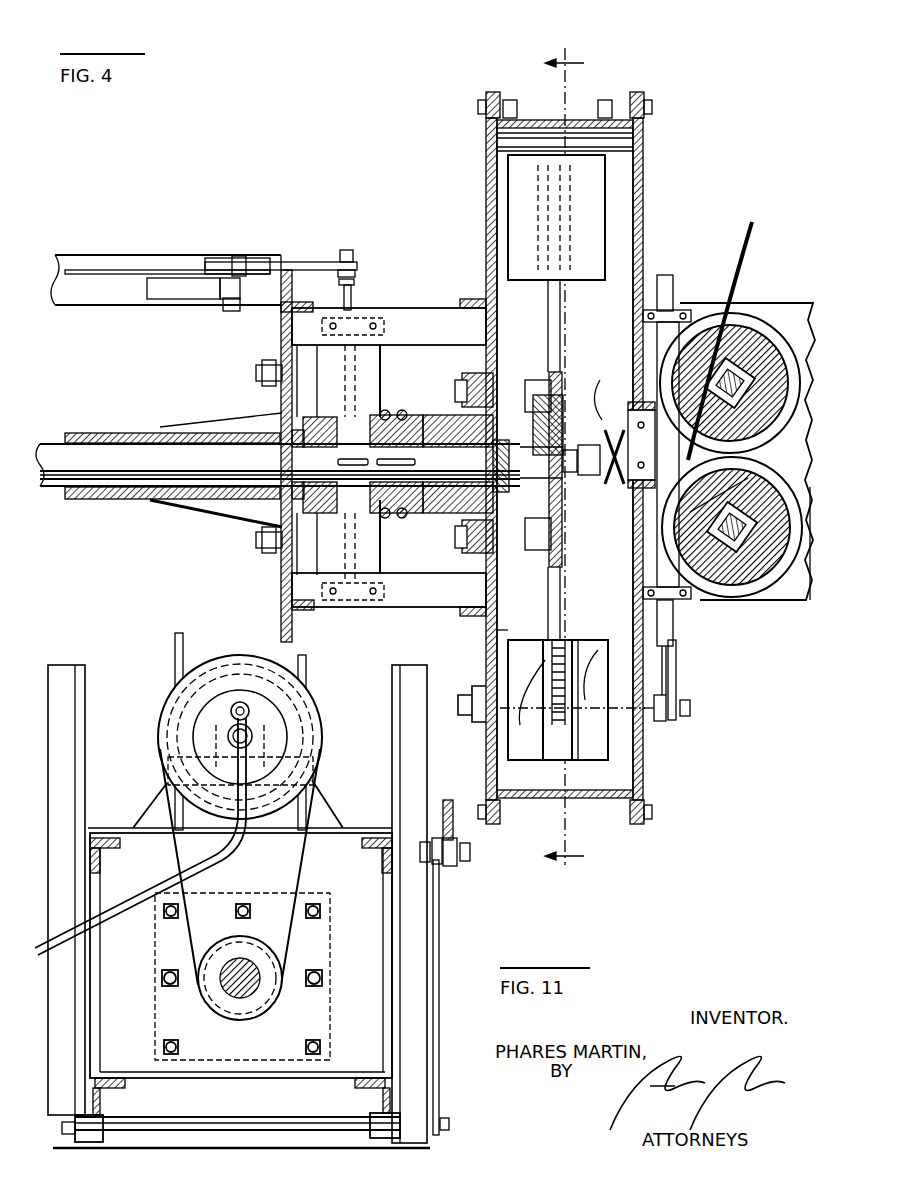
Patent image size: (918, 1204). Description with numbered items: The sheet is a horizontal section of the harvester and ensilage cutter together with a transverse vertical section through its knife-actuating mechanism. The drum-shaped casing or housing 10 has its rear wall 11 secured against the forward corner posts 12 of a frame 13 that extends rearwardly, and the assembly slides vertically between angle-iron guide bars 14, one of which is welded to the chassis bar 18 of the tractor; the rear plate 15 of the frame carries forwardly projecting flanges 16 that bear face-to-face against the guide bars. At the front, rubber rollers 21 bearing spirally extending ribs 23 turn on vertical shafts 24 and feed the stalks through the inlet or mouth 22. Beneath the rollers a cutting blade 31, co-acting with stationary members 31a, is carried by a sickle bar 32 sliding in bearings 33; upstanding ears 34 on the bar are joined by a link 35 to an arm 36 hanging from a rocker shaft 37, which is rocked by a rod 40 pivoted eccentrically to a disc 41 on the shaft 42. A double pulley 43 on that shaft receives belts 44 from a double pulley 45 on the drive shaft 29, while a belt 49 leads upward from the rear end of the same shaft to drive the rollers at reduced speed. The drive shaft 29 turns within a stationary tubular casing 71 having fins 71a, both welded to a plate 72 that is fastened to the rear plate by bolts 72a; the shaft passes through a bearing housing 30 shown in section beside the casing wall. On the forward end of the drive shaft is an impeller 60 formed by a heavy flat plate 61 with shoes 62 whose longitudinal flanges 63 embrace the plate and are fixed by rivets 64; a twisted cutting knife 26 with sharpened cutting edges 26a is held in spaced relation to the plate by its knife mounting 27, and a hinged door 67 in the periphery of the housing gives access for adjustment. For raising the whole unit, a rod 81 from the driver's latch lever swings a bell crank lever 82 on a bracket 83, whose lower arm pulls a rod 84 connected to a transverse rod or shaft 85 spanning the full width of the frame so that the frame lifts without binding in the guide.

In FIG. 4, the casing or housing 10 is at (484, 150).
In FIG. 4, the rear wall 11 is at (484, 205).
In FIG. 4, the forward corner posts 12 is at (468, 648).
In FIG. 4, the frame 13 is at (410, 318).
In FIG. 11, the frame 13 is at (112, 833).
In FIG. 4, the guide bars 14 is at (286, 277).
In FIG. 11, the guide bars 14 is at (60, 676).
In FIG. 4, the rear plate 15 is at (282, 326).
In FIG. 11, the rear plate 15 is at (380, 1012).
In FIG. 4, the flanges 16 is at (310, 375).
In FIG. 11, the flanges 16 is at (98, 1010).
In FIG. 4, the chassis bar 18 is at (160, 272).
In FIG. 4, the rollers 21 is at (735, 335).
In FIG. 4, the inlet or mouth 22 is at (604, 380).
In FIG. 4, the spirally extending ribs 23 is at (760, 322).
In FIG. 4, the shafts 24 is at (752, 500).
In FIG. 4, the cutting knife 26 is at (612, 490).
In FIG. 4, the cutting edges 26a is at (612, 540).
In FIG. 4, the toggle arm 27 is at (610, 430).
In FIG. 4, the drive shaft 29 is at (165, 478).
In FIG. 11, the drive shaft 29 is at (245, 1000).
In FIG. 4, the bearing housing 30 is at (448, 415).
In FIG. 4, the cutting blade 31 is at (562, 545).
In FIG. 4, the stationary members 31a is at (758, 250).
In FIG. 4, the sickle bar 32 is at (665, 275).
In FIG. 4, the bearings 33 is at (670, 310).
In FIG. 4, the upstanding ears 34 is at (678, 670).
In FIG. 4, the link 35 is at (690, 705).
In FIG. 4, the arm 36 is at (665, 725).
In FIG. 4, the rocker shaft 37 is at (660, 725).
In FIG. 11, the link or rod 40 is at (125, 905).
In FIG. 11, the disc 41 is at (262, 700).
In FIG. 11, the shaft 42 is at (252, 730).
In FIG. 11, the double pulley 43 is at (165, 712).
In FIG. 4, the belts 44 is at (410, 520).
In FIG. 11, the belts 44 is at (290, 880).
In FIG. 4, the double pulley 45 is at (405, 415).
In FIG. 11, the double pulley 45 is at (285, 965).
In FIG. 11, the belt 49 is at (175, 650).
In FIG. 4, the impeller 60 is at (545, 618).
In FIG. 4, the flat blade or impeller plate 61 is at (548, 320).
In FIG. 4, the shoes 62 is at (600, 185).
In FIG. 4, the longitudinal flanges 63 is at (570, 640).
In FIG. 4, the rivets 64 is at (585, 660).
In FIG. 4, the door 67 is at (545, 128).
In FIG. 4, the tubular casing 71 is at (105, 433).
In FIG. 4, the fins 71a is at (222, 428).
In FIG. 4, the plate 72 is at (262, 540).
In FIG. 11, the plate 72 is at (160, 1010).
In FIG. 4, the bolts 72a is at (262, 382).
In FIG. 11, the bolts 72a is at (318, 905).
In FIG. 4, the rod 81 is at (110, 272).
In FIG. 4, the bell crank lever 82 is at (320, 262).
In FIG. 11, the bell crank lever 82 is at (450, 800).
In FIG. 4, the bracket 83 is at (200, 290).
In FIG. 4, the rod 84 is at (355, 255).
In FIG. 11, the rod 84 is at (440, 892).
In FIG. 4, the rod or shaft 85 is at (354, 296).
In FIG. 11, the rod or shaft 85 is at (282, 1128).